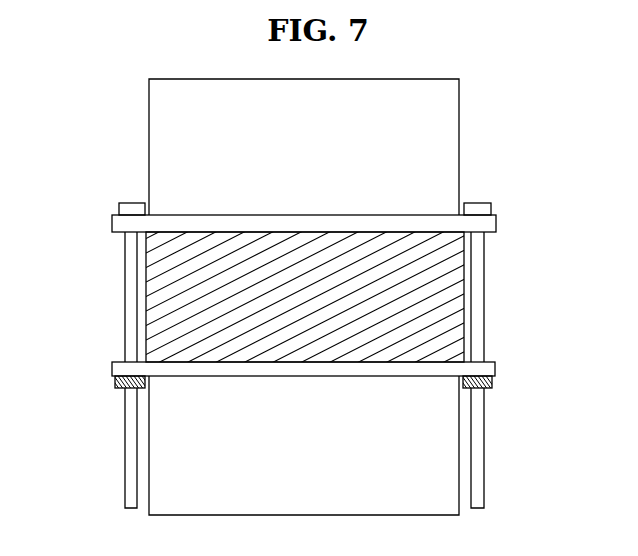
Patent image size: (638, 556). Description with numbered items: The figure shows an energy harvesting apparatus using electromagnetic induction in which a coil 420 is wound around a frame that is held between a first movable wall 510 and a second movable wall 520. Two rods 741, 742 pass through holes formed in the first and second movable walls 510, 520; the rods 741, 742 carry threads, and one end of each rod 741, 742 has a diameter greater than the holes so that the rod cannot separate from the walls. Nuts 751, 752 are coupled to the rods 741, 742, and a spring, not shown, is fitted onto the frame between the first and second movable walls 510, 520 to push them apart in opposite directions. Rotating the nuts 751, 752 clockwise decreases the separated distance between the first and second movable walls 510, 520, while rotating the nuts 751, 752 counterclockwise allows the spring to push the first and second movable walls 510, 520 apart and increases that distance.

The first movable wall 510 is at (496, 220).
The second movable wall 520 is at (495, 366).
The coil 420 is at (464, 262).
The rod 741 is at (484, 289).
The rod 742 is at (124, 293).
The nut 751 is at (492, 384).
The nut 752 is at (113, 384).